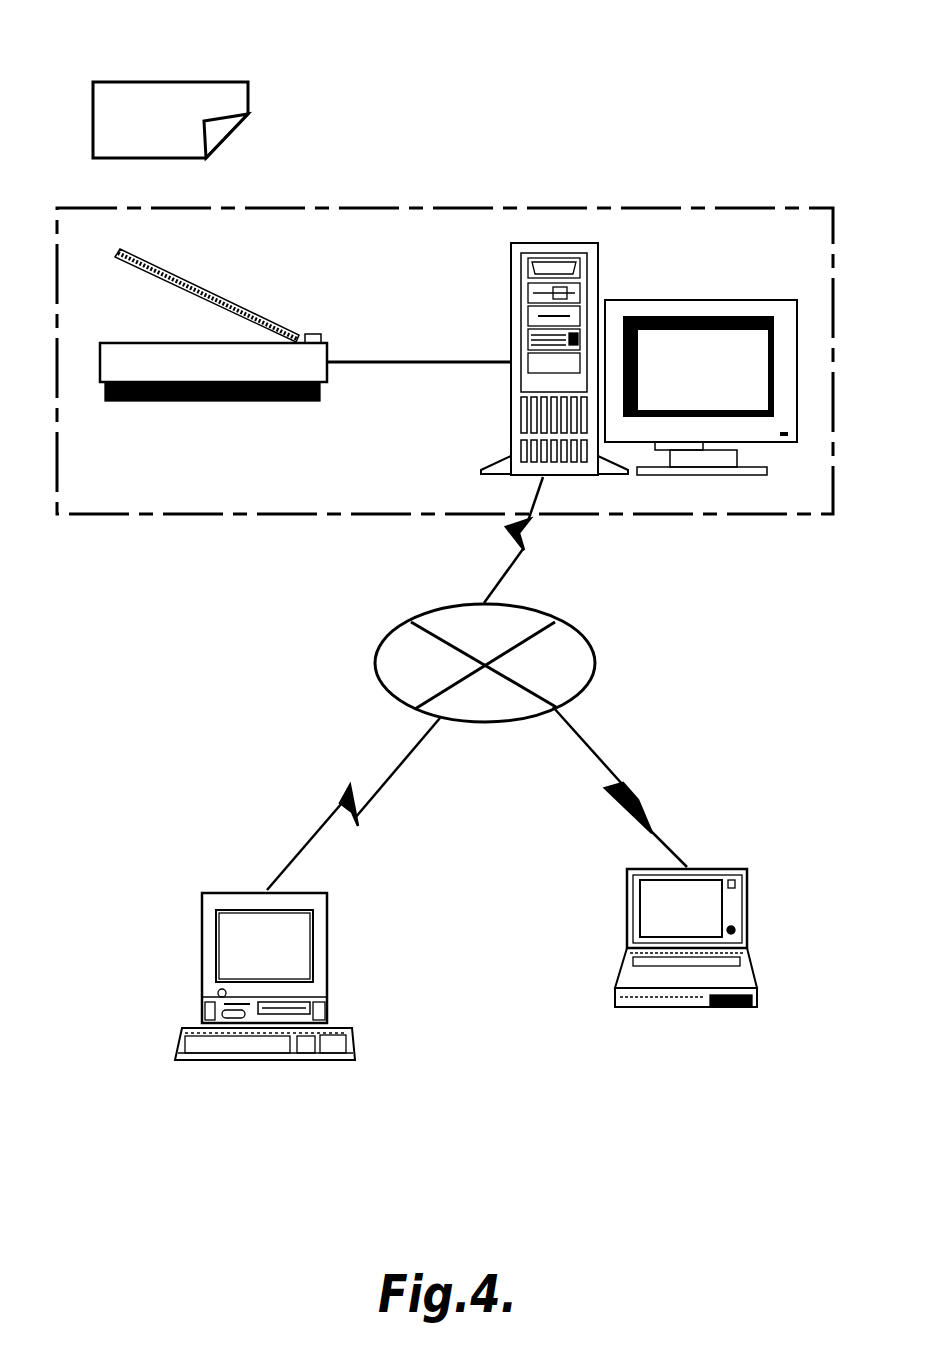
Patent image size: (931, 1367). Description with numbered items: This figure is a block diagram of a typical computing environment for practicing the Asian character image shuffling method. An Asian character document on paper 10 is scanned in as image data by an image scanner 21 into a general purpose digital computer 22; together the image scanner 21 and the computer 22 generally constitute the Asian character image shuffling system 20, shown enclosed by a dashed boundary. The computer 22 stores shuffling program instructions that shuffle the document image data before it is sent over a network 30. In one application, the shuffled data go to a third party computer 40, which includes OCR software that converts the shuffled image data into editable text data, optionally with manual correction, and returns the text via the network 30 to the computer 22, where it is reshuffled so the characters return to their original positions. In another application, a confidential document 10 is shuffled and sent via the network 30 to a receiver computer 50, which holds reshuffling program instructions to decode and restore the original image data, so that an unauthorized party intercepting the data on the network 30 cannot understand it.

The Asian character document on paper 10 is at (210, 100).
The Asian character image shuffling system 20 is at (562, 208).
The image scanner 21 is at (235, 312).
The general purpose digital computer 22 is at (598, 270).
The network 30 is at (595, 650).
The third party computer 40 is at (327, 933).
The receiver computer 50 is at (745, 893).